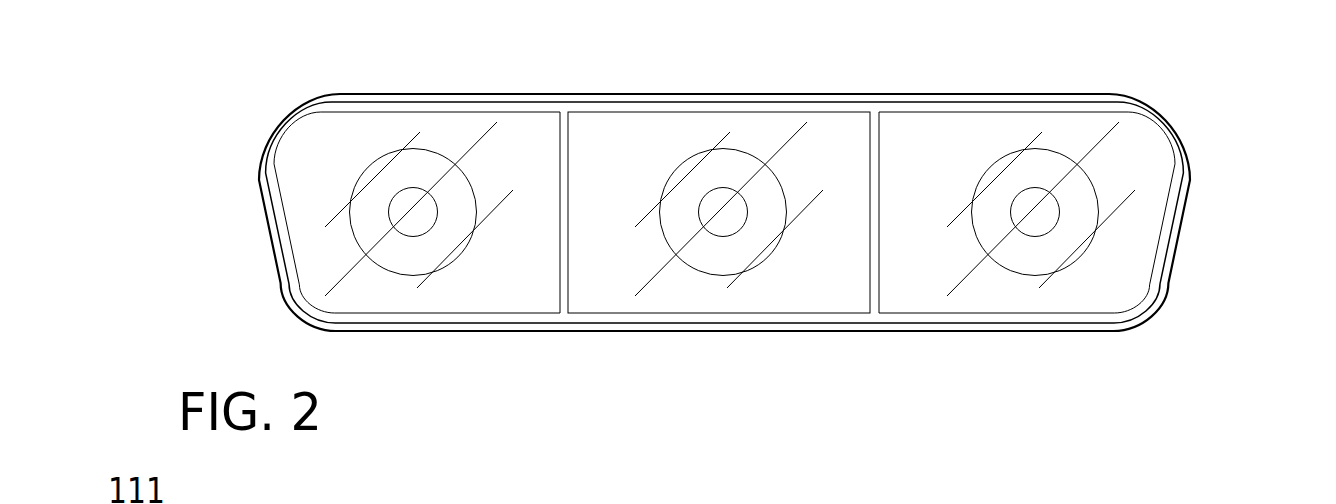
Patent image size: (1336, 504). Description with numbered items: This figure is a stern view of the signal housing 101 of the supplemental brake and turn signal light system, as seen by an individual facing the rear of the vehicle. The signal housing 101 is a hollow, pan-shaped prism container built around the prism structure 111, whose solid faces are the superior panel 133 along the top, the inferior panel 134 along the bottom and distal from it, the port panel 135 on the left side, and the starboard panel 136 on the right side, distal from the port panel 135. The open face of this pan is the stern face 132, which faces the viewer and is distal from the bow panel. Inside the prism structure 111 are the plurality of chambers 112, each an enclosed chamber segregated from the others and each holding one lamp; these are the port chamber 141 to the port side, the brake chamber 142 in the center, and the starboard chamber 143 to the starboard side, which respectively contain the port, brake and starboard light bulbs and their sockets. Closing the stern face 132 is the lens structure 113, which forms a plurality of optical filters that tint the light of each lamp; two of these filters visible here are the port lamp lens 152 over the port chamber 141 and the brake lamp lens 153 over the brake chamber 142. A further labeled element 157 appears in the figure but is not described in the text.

The signal housing 101 is at (156, 180).
The prism structure 111 is at (1125, 100).
The plurality of chambers 112 is at (913, 143).
The lens structure 113 is at (1167, 145).
The stern face 132 is at (905, 282).
The superior panel 133 is at (453, 93).
The inferior panel 134 is at (658, 331).
The port panel 135 is at (269, 233).
The starboard panel 136 is at (1172, 267).
The port chamber 141 is at (505, 283).
The brake chamber 142 is at (603, 287).
The starboard chamber 143 is at (1087, 295).
The port lamp lens 152 is at (842, 220).
The brake lamp lens 153 is at (1140, 217).
The first recess 157 is at (317, 155).